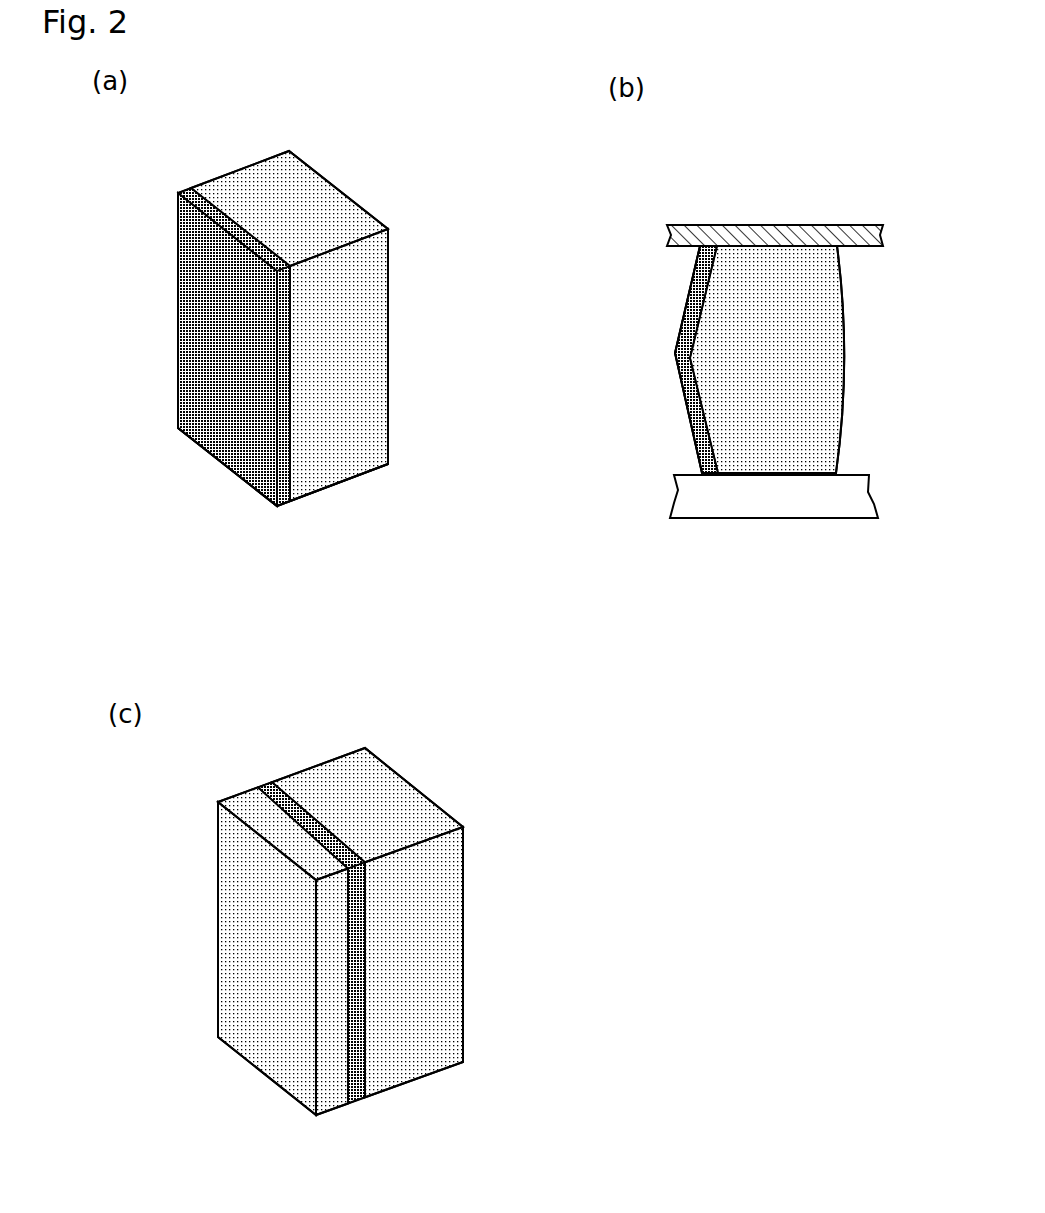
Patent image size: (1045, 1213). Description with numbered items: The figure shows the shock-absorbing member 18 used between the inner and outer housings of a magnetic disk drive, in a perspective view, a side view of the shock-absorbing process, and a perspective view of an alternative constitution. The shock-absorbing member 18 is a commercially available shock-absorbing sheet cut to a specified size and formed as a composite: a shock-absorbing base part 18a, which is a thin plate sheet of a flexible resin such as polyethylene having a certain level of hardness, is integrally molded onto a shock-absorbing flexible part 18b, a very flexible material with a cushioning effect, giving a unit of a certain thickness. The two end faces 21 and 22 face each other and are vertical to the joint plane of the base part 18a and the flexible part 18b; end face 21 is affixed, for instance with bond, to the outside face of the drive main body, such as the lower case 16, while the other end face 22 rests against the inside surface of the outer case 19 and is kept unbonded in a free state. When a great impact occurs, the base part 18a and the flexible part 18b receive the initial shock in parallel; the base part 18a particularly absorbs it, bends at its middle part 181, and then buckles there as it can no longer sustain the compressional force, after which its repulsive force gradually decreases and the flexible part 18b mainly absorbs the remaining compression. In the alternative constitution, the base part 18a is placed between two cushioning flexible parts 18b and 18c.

The lower case 16 is at (857, 230).
The shock-absorbing member 18 is at (513, 136).
The shock-absorbing base part 18a is at (283, 333).
The shock-absorbing flexible part 18b is at (358, 340).
The shock-absorbing flexible part 18c is at (337, 1050).
The outer case 19 is at (738, 490).
The end face 21 is at (274, 210).
The end face 22 is at (315, 480).
The middle part 181 is at (675, 357).